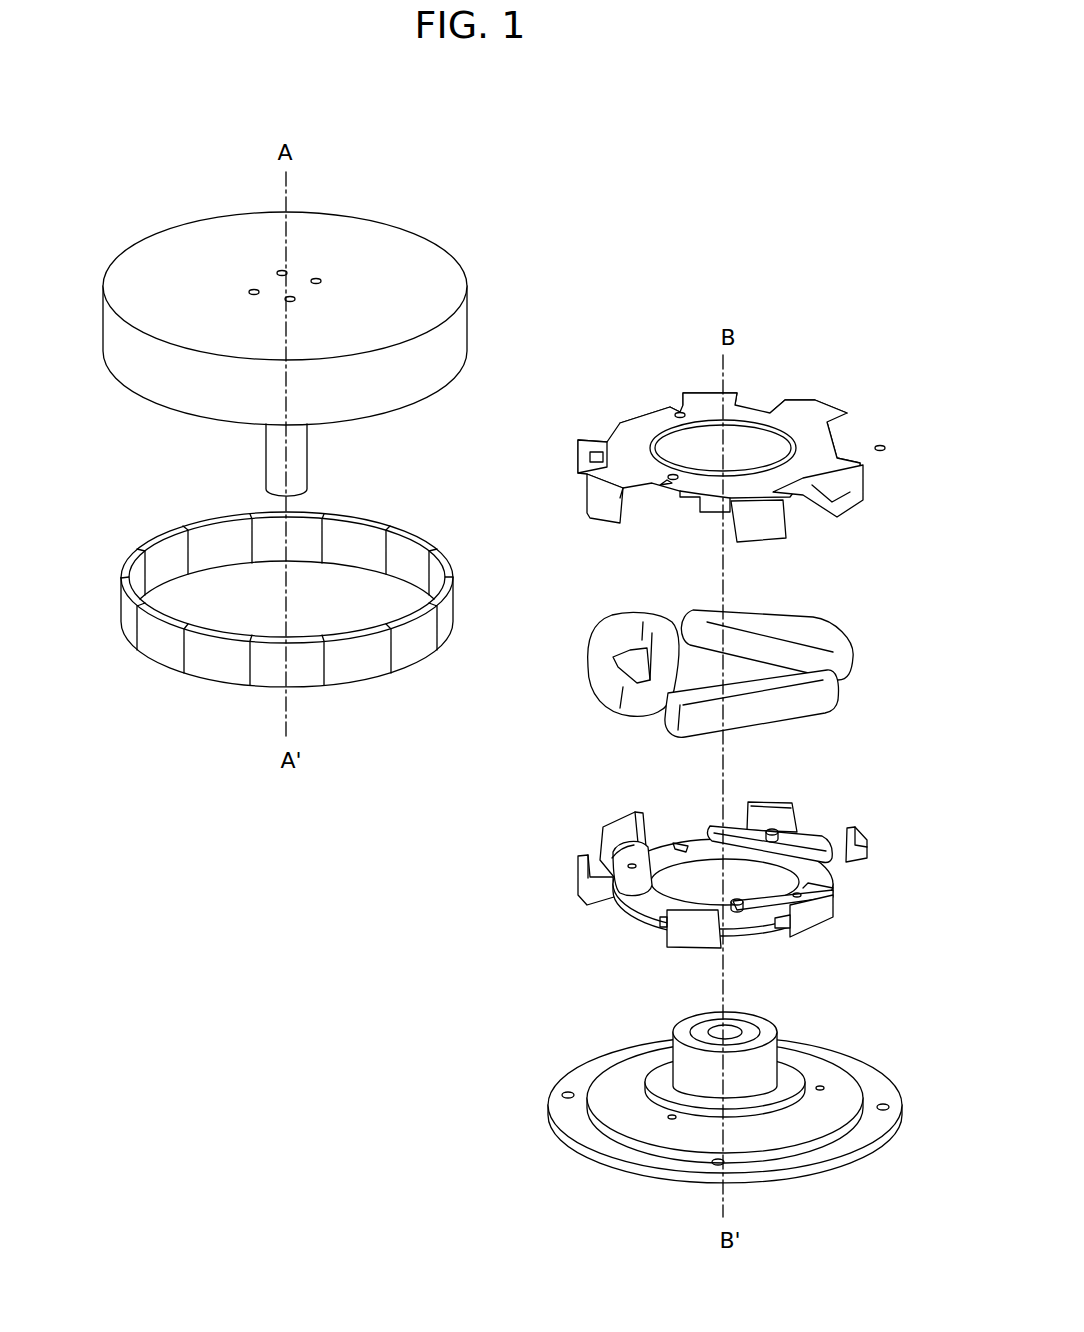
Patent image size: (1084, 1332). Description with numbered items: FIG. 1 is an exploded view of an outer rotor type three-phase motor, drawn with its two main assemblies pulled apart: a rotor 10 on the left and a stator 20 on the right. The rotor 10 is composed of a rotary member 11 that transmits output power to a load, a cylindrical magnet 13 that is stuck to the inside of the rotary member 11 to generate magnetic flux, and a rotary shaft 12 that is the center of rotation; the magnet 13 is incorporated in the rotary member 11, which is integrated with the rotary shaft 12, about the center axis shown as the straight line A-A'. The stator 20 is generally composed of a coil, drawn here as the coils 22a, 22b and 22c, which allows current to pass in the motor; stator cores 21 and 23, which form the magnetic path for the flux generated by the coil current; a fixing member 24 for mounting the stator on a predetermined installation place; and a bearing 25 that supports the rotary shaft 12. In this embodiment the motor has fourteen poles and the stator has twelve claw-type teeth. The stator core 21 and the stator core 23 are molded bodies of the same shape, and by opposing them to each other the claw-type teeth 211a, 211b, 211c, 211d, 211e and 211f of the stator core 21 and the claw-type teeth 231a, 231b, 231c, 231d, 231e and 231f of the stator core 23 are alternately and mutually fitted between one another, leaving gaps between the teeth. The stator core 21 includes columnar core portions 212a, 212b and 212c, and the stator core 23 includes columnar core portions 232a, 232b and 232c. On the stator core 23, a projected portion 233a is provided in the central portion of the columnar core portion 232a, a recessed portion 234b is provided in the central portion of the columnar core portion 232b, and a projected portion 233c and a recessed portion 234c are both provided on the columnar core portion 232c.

The rotor 10 is at (106, 707).
The rotary member 11 is at (352, 217).
The rotary shaft 12 is at (308, 457).
The cylindrical magnet 13 is at (363, 516).
The stator 20 is at (513, 405).
The stator core 21 is at (755, 400).
The claw-type tooth 211a is at (633, 520).
The claw-type tooth 211b is at (733, 394).
The claw-type tooth 211c is at (855, 463).
The claw-type tooth 211d is at (655, 415).
The claw-type tooth 211e is at (826, 410).
The claw-type tooth 211f is at (785, 524).
The columnar core portion 212a is at (592, 449).
The columnar core portion 212b is at (750, 434).
The columnar core portion 212c is at (840, 492).
The coil 22a is at (793, 613).
The coil 22b is at (636, 626).
The coil 22c is at (838, 690).
The stator core 23 is at (670, 843).
The claw-type tooth 231a is at (863, 840).
The claw-type tooth 231b is at (627, 815).
The claw-type tooth 231c is at (702, 933).
The claw-type tooth 231d is at (792, 806).
The claw-type tooth 231e is at (579, 885).
The claw-type tooth 231f is at (835, 914).
The columnar core portion 232a is at (810, 840).
The columnar core portion 232b is at (630, 864).
The columnar core portion 232c is at (790, 918).
The projected portion 233a is at (772, 832).
The projected portion 233c is at (738, 910).
The recessed portion 234b is at (612, 860).
The recessed portion 234c is at (836, 890).
The fixing member 24 is at (840, 1047).
The bearing 25 is at (760, 1023).